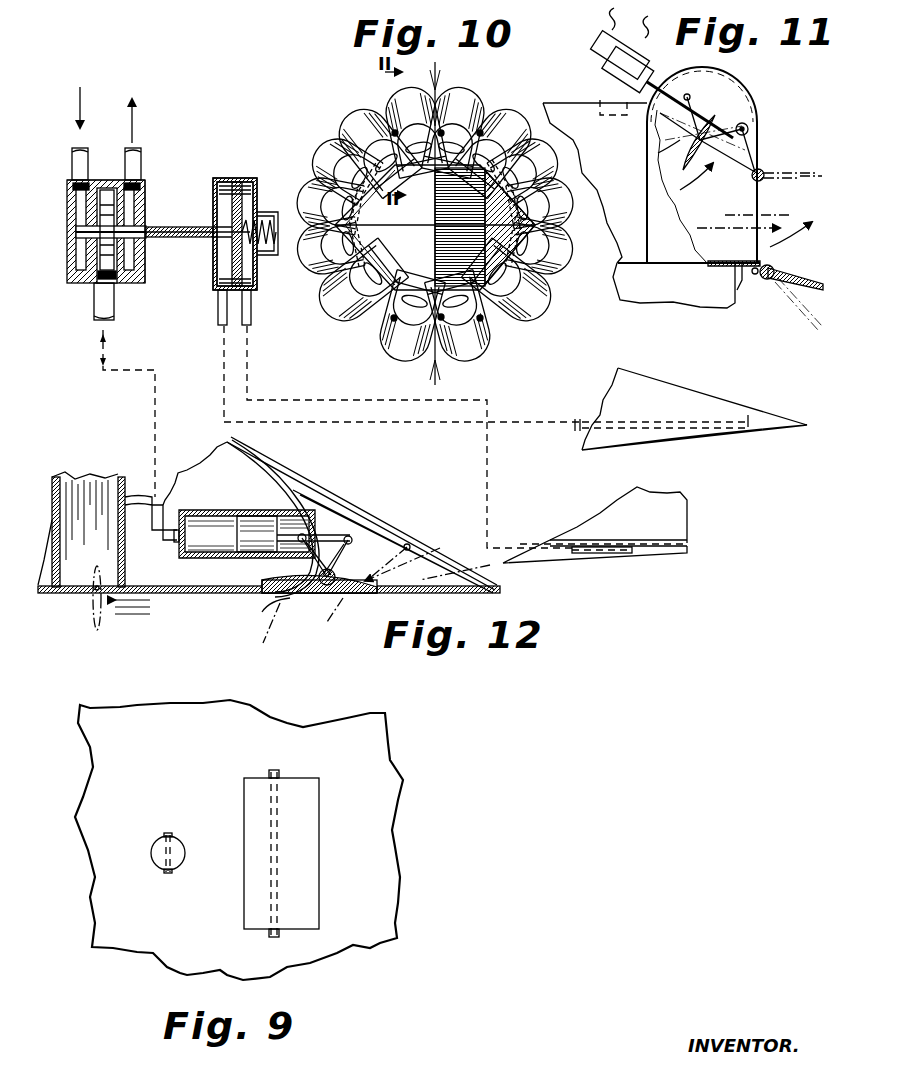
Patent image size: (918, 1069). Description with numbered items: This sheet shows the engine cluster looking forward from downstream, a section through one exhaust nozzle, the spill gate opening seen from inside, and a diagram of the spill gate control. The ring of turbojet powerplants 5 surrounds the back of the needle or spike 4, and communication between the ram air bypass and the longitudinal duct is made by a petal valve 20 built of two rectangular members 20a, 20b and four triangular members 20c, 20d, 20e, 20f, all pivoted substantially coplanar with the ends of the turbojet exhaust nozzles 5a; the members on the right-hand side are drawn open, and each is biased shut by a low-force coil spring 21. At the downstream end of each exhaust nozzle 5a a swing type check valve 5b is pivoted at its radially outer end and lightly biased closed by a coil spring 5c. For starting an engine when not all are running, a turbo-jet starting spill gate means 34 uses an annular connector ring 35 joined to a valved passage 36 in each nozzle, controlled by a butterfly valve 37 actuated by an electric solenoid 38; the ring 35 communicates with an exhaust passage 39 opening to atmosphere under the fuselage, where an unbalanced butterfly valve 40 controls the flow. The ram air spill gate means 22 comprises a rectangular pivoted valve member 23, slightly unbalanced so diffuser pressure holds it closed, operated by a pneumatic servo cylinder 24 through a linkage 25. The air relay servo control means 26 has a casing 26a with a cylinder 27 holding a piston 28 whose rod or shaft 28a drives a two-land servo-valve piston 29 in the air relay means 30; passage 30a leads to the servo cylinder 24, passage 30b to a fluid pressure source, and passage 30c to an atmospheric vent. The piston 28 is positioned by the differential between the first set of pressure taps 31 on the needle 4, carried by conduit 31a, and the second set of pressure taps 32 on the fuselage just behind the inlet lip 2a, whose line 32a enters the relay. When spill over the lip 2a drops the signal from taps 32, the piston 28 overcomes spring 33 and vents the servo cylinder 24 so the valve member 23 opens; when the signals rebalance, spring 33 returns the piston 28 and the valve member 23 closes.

In FIG. 12, the inlet lip 2a is at (690, 542).
In FIG. 12, the needle or spike 4 is at (655, 398).
In FIG. 10, the turbojet powerplants 5 is at (438, 358).
In FIG. 11, the turbojet exhaust nozzles 5a is at (720, 268).
In FIG. 10, the swing type check valve 5b is at (360, 125).
In FIG. 11, the swing type check valve 5b is at (780, 248).
In FIG. 11, the coil spring 5c is at (768, 172).
In FIG. 11, the petal valve 20 is at (808, 280).
In FIG. 10, the rectangular member 20a is at (385, 190).
In FIG. 10, the rectangular member 20b is at (400, 232).
In FIG. 10, the triangular member 20c is at (318, 145).
In FIG. 10, the triangular member 20d is at (335, 278).
In FIG. 10, the triangular member 20e is at (560, 148).
In FIG. 10, the triangular member 20f is at (550, 232).
In FIG. 11, the coil spring 21 is at (765, 282).
In FIG. 12, the ram air spill gate means 22 is at (340, 605).
In FIG. 12, the pivoted valve member 23 is at (262, 605).
In FIG. 9, the pivoted valve member 23 is at (308, 842).
In FIG. 12, the pneumatic servo cylinder 24 is at (252, 510).
In FIG. 12, the linkage 25 is at (340, 520).
In FIG. 12, the air relay servo control means 26 is at (180, 245).
In FIG. 12, the casing 26a is at (145, 208).
In FIG. 12, the cylinder 27 is at (218, 180).
In FIG. 12, the piston 28 is at (237, 182).
In FIG. 12, the rod or shaft 28a is at (222, 230).
In FIG. 12, the two-land servo-valve piston 29 is at (104, 205).
In FIG. 12, the air relay means 30 is at (76, 283).
In FIG. 12, the conduit passage 30a is at (114, 300).
In FIG. 12, the conduit passage 30b is at (72, 165).
In FIG. 12, the conduit passage 30c is at (141, 165).
In FIG. 12, the first set of pressure taps 31 is at (740, 425).
In FIG. 12, the conduit 31a is at (218, 312).
In FIG. 12, the second set of pressure taps 32 is at (633, 553).
In FIG. 12, the line 32a is at (251, 305).
In FIG. 12, the spring 33 is at (278, 212).
In FIG. 11, the turbo-jet starting spill gate means 34 is at (762, 115).
In FIG. 11, the annular connector ring 35 is at (752, 85).
In FIG. 10, the valved passage 36 is at (490, 115).
In FIG. 11, the valved passage 36 is at (713, 160).
In FIG. 11, the butterfly valve 37 is at (657, 167).
In FIG. 11, the electric solenoid 38 is at (612, 38).
In FIG. 12, the exhaust passage 39 is at (92, 488).
In FIG. 12, the unbalanced butterfly valve 40 is at (74, 595).
In FIG. 9, the unbalanced butterfly valve 40 is at (178, 850).